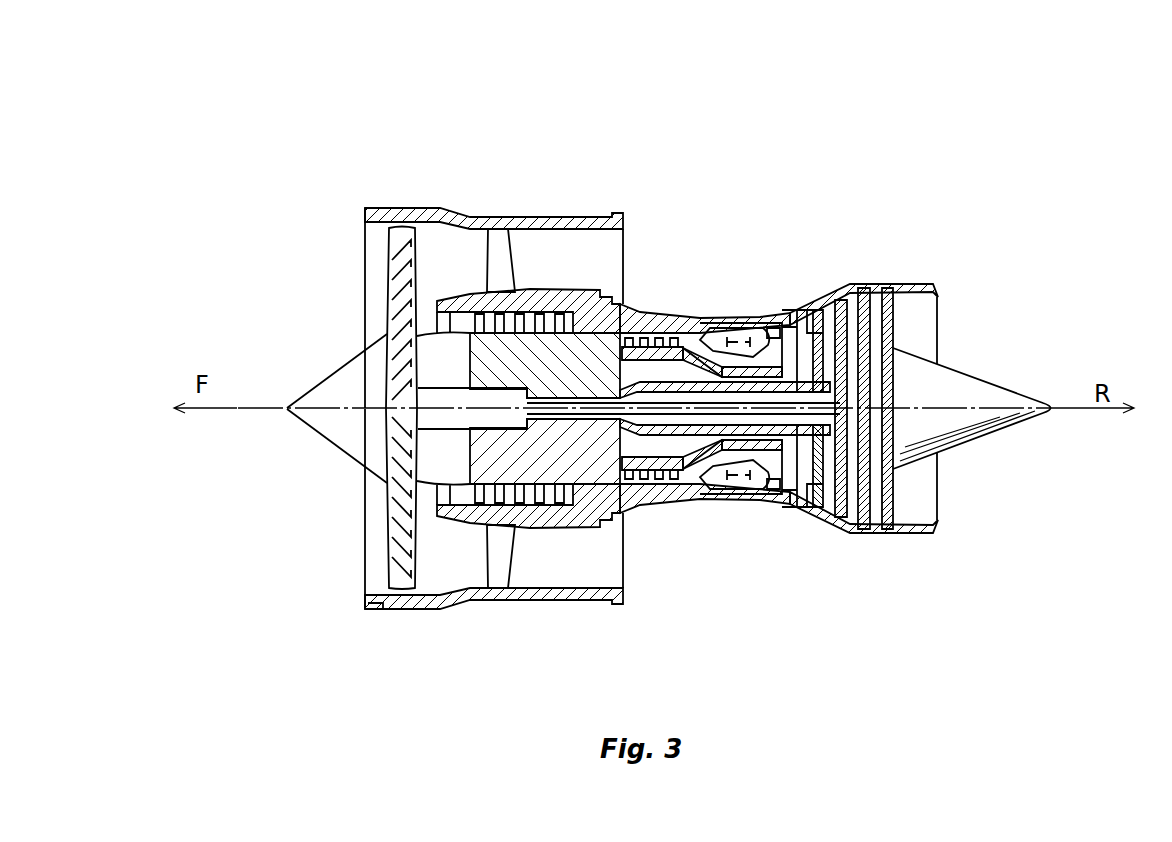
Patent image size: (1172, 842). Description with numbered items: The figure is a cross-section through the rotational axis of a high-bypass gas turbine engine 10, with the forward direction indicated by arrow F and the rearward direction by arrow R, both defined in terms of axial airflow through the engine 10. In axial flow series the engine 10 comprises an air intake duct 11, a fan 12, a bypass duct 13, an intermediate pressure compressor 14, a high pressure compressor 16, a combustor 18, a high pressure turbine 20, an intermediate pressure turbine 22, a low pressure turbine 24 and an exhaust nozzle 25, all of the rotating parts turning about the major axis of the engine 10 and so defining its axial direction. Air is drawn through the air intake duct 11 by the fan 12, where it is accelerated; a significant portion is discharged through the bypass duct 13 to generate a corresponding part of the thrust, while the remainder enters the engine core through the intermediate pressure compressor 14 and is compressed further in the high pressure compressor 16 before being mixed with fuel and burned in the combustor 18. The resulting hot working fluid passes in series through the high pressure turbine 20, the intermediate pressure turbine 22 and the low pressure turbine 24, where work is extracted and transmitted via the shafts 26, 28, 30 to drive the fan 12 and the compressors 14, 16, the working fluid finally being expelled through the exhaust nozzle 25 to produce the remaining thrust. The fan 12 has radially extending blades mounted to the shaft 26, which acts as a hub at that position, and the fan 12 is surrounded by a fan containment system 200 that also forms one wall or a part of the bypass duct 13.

The bypass gas turbine engine 10 is at (803, 125).
The air intake duct 11 is at (373, 265).
The fan 12 is at (383, 313).
The bypass duct 13 is at (576, 272).
The intermediate pressure compressor 14 is at (475, 328).
The high pressure compressor 16 is at (673, 328).
The combustor 18 is at (738, 337).
The high pressure turbine 20 is at (782, 338).
The intermediate pressure turbine 22 is at (820, 313).
The low pressure turbine 24 is at (893, 298).
The exhaust nozzle 25 is at (932, 343).
The shaft 26 is at (425, 418).
The shaft 28 is at (690, 430).
The shaft 30 is at (742, 445).
The fan containment system 200 is at (398, 613).